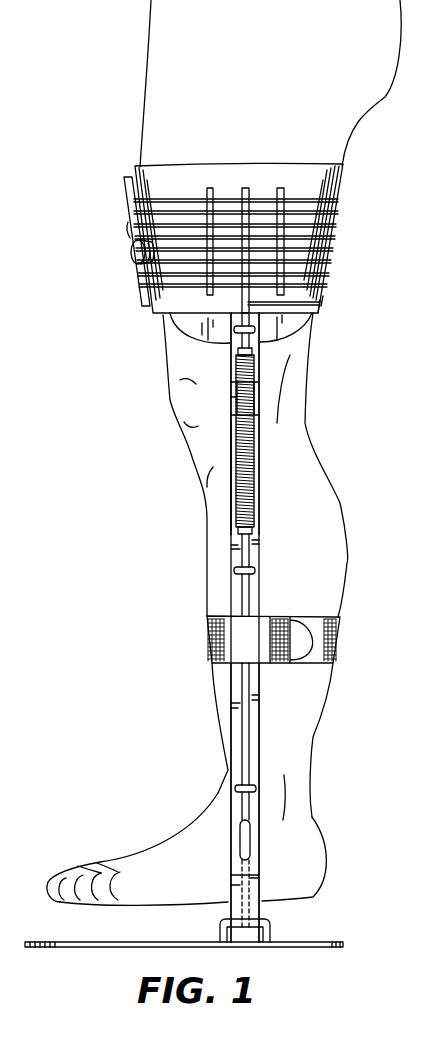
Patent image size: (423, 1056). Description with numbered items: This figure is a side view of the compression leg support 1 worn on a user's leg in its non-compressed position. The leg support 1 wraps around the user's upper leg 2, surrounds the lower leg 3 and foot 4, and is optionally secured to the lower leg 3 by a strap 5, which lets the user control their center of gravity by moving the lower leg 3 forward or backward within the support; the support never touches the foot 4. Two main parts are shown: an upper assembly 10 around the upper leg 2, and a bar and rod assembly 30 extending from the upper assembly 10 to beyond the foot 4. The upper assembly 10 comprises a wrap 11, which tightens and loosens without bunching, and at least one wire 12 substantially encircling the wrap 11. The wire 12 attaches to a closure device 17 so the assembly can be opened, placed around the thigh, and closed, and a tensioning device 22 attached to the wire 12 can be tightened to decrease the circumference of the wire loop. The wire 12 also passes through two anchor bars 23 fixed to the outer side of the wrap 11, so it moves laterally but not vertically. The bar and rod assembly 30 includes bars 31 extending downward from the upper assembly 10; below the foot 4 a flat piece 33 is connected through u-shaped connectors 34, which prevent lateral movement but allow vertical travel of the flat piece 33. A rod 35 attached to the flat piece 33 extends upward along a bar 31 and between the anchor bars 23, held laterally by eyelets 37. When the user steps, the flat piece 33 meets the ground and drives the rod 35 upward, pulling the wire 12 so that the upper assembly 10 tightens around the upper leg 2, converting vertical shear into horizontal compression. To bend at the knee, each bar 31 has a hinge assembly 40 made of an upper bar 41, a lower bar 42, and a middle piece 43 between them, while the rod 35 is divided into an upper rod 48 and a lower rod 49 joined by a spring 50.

The leg support 1 is at (78, 221).
The upper leg 2 is at (150, 135).
The lower leg 3 is at (328, 583).
The foot 4 is at (170, 840).
The strap 5 is at (207, 630).
The upper assembly 10 is at (345, 182).
The wrap 11 is at (160, 331).
The wire 12 is at (310, 233).
The closure device 17 is at (125, 190).
The tensioning device 22 is at (131, 255).
The anchor bars 23 is at (209, 188).
The bar and rod assembly 30 is at (260, 480).
The bars 31 is at (260, 557).
The flat piece 33 is at (87, 945).
The u-shaped connectors 34 is at (270, 933).
The rod 35 is at (250, 733).
The eyelets 37 is at (255, 330).
The hinge assembly 40 is at (260, 389).
The upper bar 41 is at (232, 349).
The lower bar 42 is at (231, 450).
The middle piece 43 is at (231, 400).
The upper rod 48 is at (322, 306).
The lower rod 49 is at (255, 688).
The spring 50 is at (260, 502).